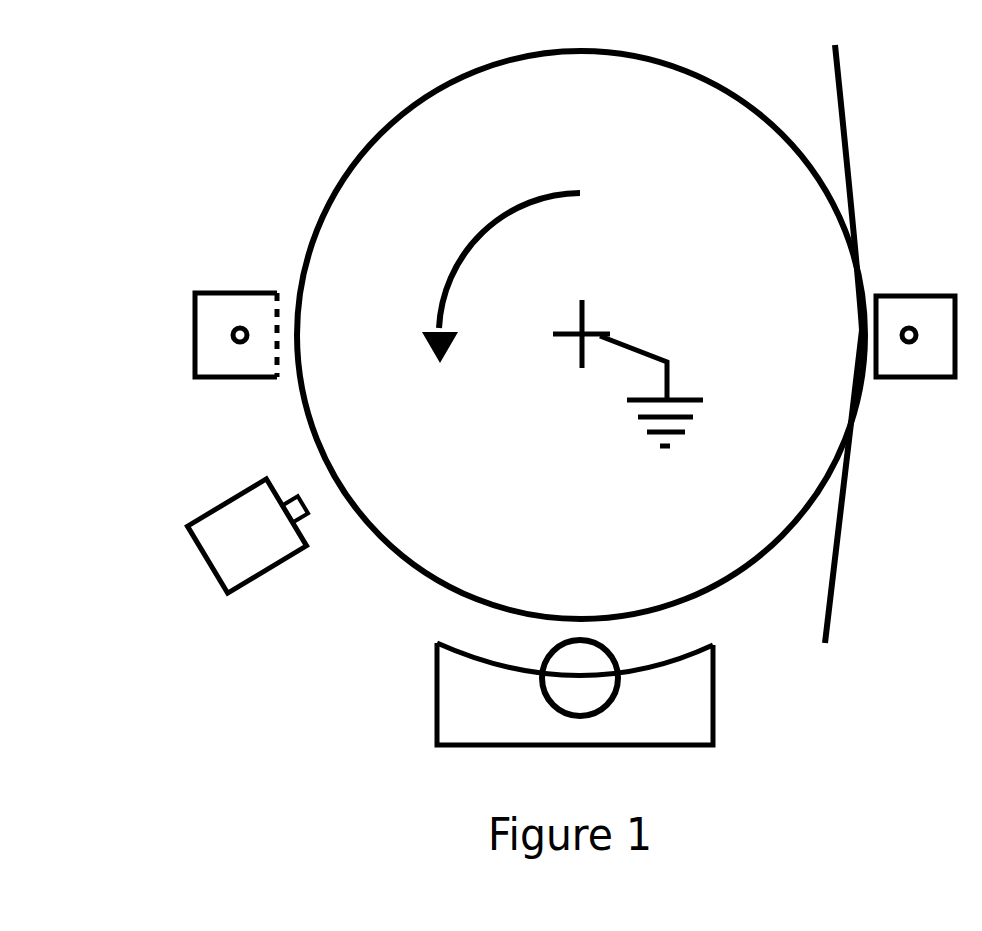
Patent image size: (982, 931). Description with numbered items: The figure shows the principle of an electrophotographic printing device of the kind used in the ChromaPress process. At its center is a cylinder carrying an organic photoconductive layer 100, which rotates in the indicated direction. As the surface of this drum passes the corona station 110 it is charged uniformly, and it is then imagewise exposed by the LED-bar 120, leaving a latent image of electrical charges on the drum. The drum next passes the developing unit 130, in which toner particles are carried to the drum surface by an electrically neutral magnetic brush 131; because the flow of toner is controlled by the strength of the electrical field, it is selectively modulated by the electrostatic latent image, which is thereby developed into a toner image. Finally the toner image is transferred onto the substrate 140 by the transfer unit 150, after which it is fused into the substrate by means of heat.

The organic photoconductive layer 100 is at (742, 128).
The corona station 110 is at (243, 283).
The LED-bar 120 is at (184, 545).
The developing unit 130 is at (420, 672).
The magnetic brush 131 is at (620, 683).
The substrate 140 is at (848, 530).
The transfer unit 150 is at (922, 383).